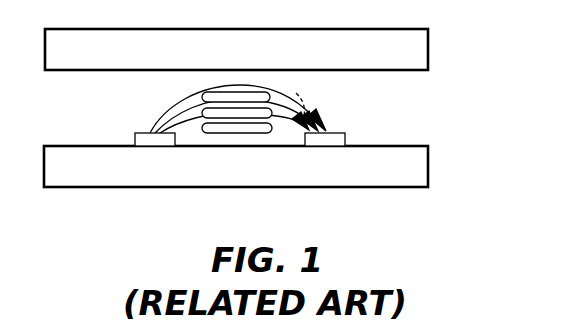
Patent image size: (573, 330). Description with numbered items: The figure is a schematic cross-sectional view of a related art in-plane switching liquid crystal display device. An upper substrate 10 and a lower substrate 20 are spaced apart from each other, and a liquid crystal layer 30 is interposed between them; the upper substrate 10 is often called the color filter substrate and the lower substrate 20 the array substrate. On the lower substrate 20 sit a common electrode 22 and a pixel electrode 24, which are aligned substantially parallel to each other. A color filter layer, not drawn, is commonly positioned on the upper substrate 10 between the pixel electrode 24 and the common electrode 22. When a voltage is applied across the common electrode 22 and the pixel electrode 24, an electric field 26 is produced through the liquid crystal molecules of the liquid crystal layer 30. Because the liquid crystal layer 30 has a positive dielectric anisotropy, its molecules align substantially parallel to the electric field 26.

The upper substrate 10 is at (450, 29).
The lower substrate 20 is at (450, 146).
The liquid crystal layer 30 is at (313, 154).
The common electrode 22 is at (153, 146).
The pixel electrode 24 is at (332, 146).
The electric field 26 is at (290, 122).